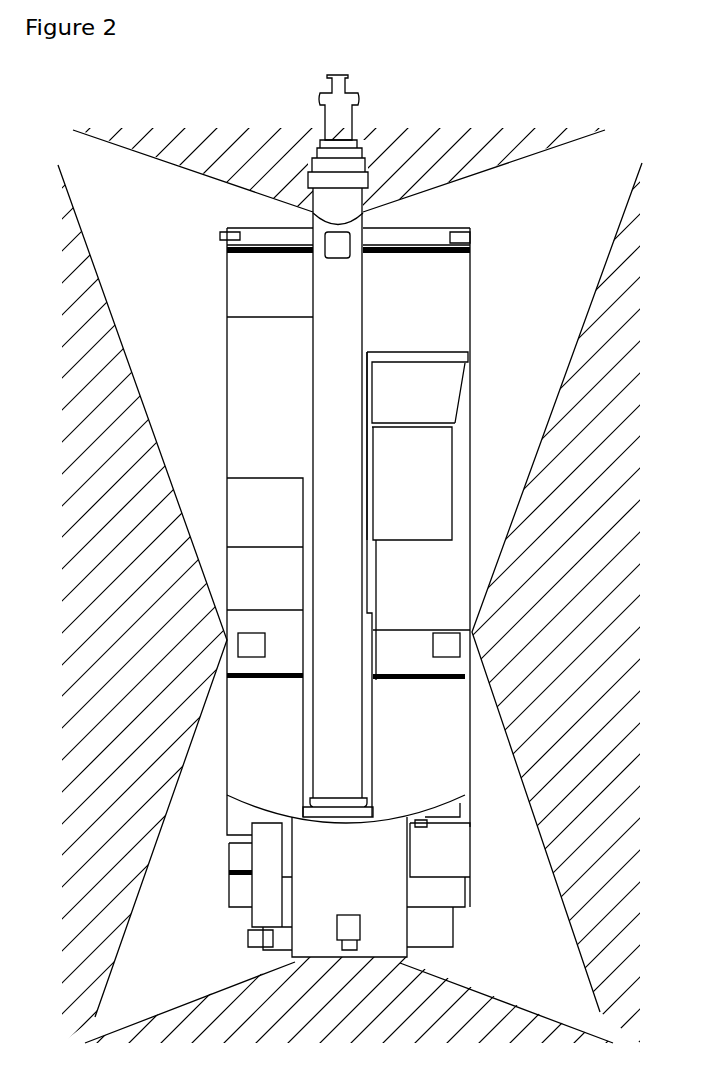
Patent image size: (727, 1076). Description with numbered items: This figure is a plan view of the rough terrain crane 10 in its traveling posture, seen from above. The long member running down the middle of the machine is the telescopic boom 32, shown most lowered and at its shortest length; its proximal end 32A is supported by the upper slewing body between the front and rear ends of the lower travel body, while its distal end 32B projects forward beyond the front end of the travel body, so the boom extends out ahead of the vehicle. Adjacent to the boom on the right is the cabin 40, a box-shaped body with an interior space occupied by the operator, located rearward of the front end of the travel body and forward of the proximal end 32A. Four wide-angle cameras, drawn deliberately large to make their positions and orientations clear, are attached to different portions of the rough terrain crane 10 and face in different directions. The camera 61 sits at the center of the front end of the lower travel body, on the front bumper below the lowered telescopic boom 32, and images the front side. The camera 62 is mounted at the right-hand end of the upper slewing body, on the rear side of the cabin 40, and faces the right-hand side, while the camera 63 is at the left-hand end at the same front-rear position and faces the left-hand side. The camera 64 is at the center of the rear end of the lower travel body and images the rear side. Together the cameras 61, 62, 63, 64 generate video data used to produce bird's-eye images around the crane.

The rough terrain crane 10 is at (532, 261).
The telescopic boom 32 is at (342, 328).
The proximal end 32A is at (337, 760).
The distal end 32B is at (349, 77).
The cabin 40 is at (433, 463).
The camera 61 is at (340, 259).
The camera 62 is at (446, 640).
The camera 63 is at (251, 640).
The camera 64 is at (361, 928).